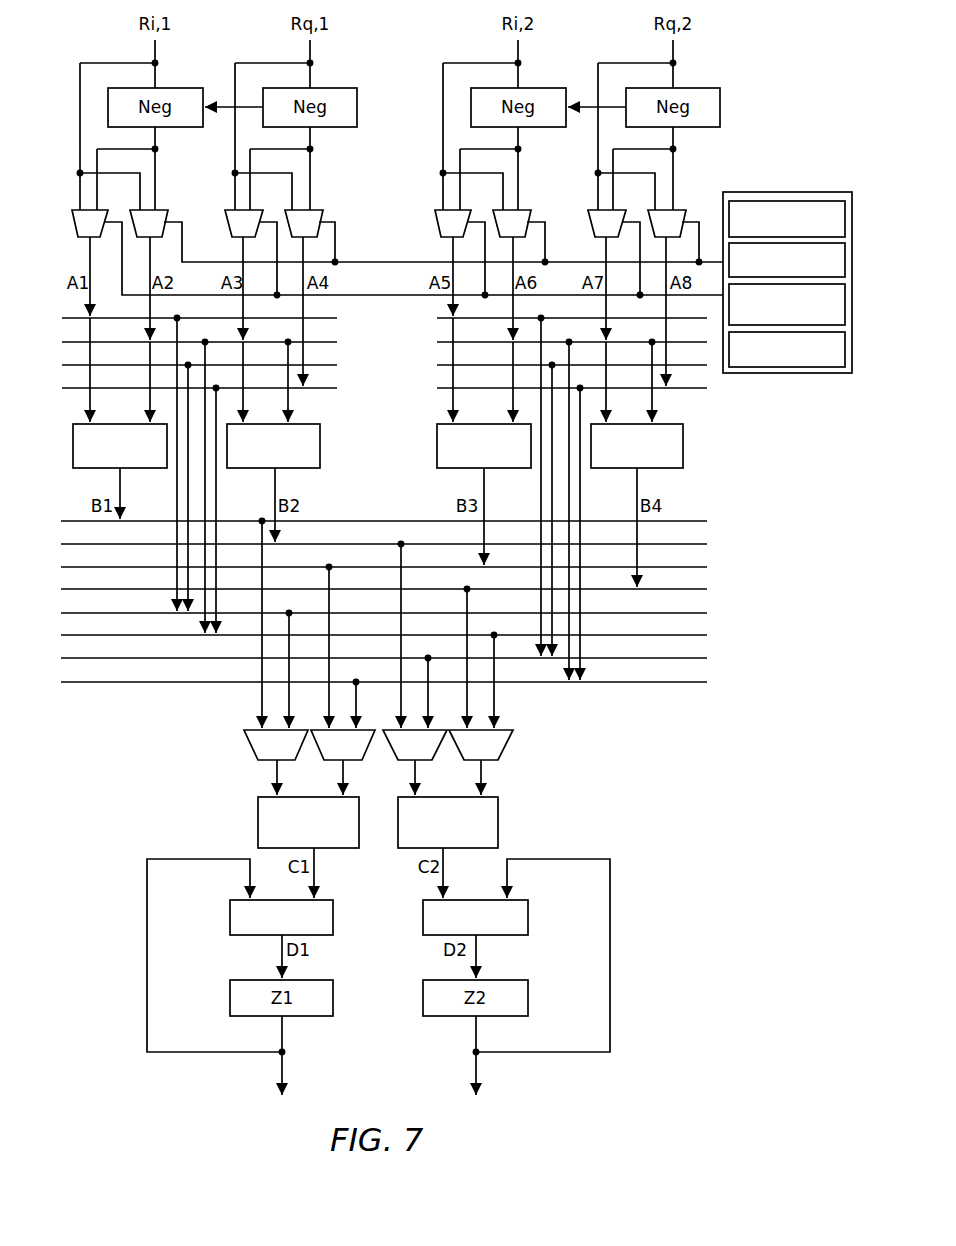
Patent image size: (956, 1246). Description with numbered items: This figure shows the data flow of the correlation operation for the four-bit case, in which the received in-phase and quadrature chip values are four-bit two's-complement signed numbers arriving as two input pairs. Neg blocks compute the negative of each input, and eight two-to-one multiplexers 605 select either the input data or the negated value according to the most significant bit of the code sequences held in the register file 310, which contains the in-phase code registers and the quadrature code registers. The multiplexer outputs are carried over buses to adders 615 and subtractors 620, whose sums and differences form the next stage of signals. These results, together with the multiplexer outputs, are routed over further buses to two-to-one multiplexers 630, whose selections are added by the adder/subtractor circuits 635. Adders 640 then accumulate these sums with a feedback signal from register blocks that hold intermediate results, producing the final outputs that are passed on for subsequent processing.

The register file 310 is at (823, 192).
The 2-1 multiplexers 605 is at (76, 227).
The adders 615 is at (73, 458).
The subtractors 620 is at (320, 440).
The 2-1 multiplexers 630 is at (251, 748).
The adder/subtractor circuits 635 is at (258, 830).
The adders 640 is at (230, 923).